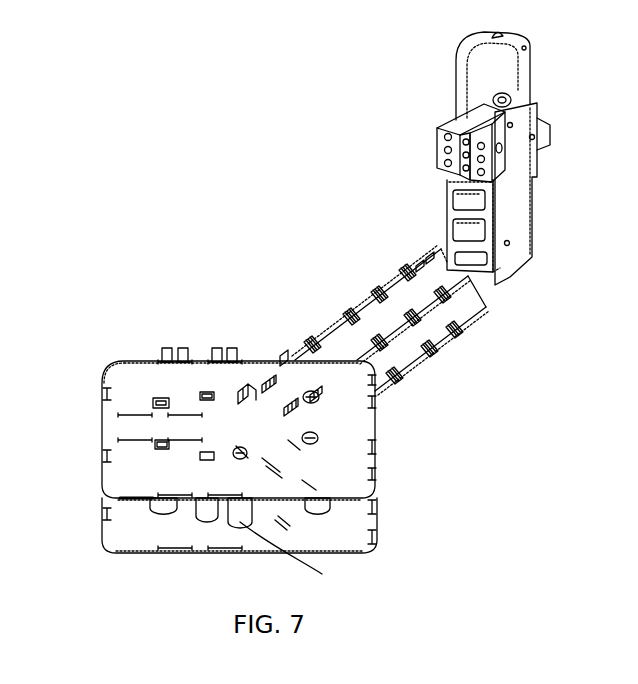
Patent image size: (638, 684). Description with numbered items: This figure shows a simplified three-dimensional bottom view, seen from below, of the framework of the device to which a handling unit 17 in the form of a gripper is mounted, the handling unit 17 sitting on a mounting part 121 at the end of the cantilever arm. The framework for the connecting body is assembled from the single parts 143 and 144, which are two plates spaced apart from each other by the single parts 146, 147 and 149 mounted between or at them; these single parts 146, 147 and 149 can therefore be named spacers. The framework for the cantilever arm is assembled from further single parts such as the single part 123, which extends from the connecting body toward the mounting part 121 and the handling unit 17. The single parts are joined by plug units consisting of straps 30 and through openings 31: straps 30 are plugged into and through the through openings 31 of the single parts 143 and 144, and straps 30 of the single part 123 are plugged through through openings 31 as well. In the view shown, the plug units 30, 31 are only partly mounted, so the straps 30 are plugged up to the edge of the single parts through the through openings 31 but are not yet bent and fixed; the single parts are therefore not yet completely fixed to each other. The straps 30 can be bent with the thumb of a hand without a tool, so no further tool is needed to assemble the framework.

The handling unit 17 is at (530, 185).
The strap 30 is at (168, 348).
The through opening 31 is at (400, 276).
The bracket 121 is at (440, 133).
The single part 123 is at (445, 278).
The single part 143 is at (148, 548).
The single part 144 is at (104, 375).
The single part 146 is at (298, 559).
The single part 147 is at (150, 510).
The single part 149 is at (160, 398).